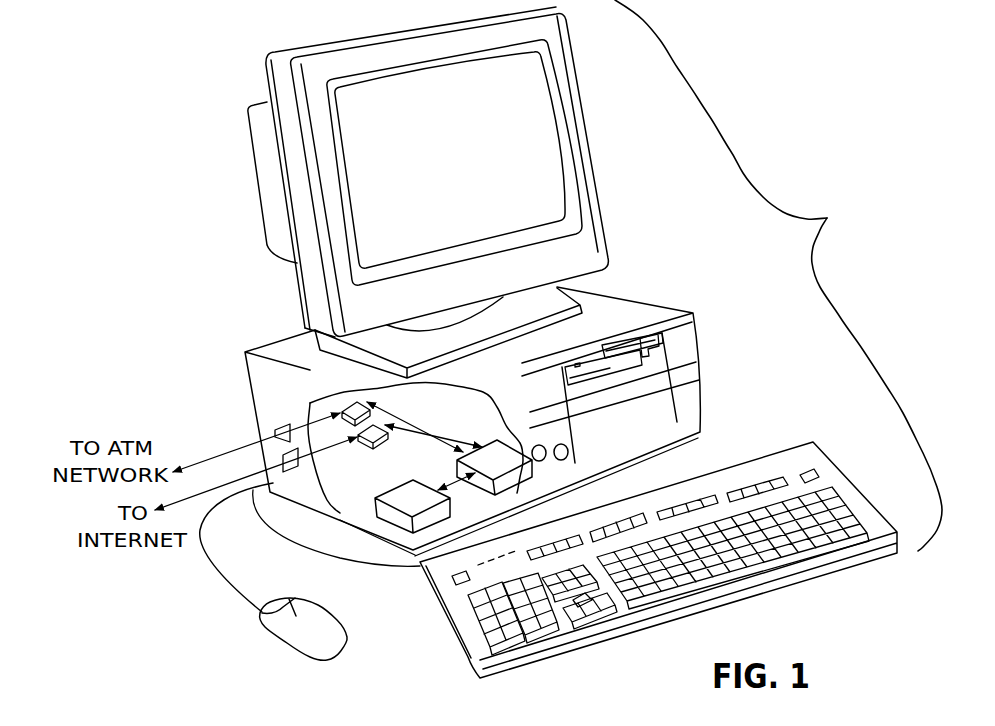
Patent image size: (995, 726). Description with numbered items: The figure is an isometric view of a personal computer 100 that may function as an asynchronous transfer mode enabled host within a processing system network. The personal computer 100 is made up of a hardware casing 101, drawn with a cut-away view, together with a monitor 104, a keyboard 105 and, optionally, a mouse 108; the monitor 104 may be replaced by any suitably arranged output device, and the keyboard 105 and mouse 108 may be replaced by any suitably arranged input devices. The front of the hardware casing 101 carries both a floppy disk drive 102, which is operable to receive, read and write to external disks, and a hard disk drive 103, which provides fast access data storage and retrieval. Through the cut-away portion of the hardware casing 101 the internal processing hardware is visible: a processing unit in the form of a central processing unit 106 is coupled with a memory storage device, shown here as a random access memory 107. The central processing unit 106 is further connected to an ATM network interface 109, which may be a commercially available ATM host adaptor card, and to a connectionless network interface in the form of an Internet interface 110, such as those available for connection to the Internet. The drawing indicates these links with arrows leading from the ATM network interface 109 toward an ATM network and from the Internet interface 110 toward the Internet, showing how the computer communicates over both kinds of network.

The personal computer 100 is at (778, 275).
The hardware casing 101 is at (660, 304).
The floppy disk drive 102 is at (663, 355).
The hard disk drive 103 is at (630, 387).
The monitor 104 is at (298, 280).
The keyboard 105 is at (818, 447).
The central processing unit 106 is at (488, 440).
The random access memory 107 is at (383, 522).
The mouse 108 is at (262, 613).
The ATM network interface 109 is at (340, 403).
The Internet interface 110 is at (360, 442).